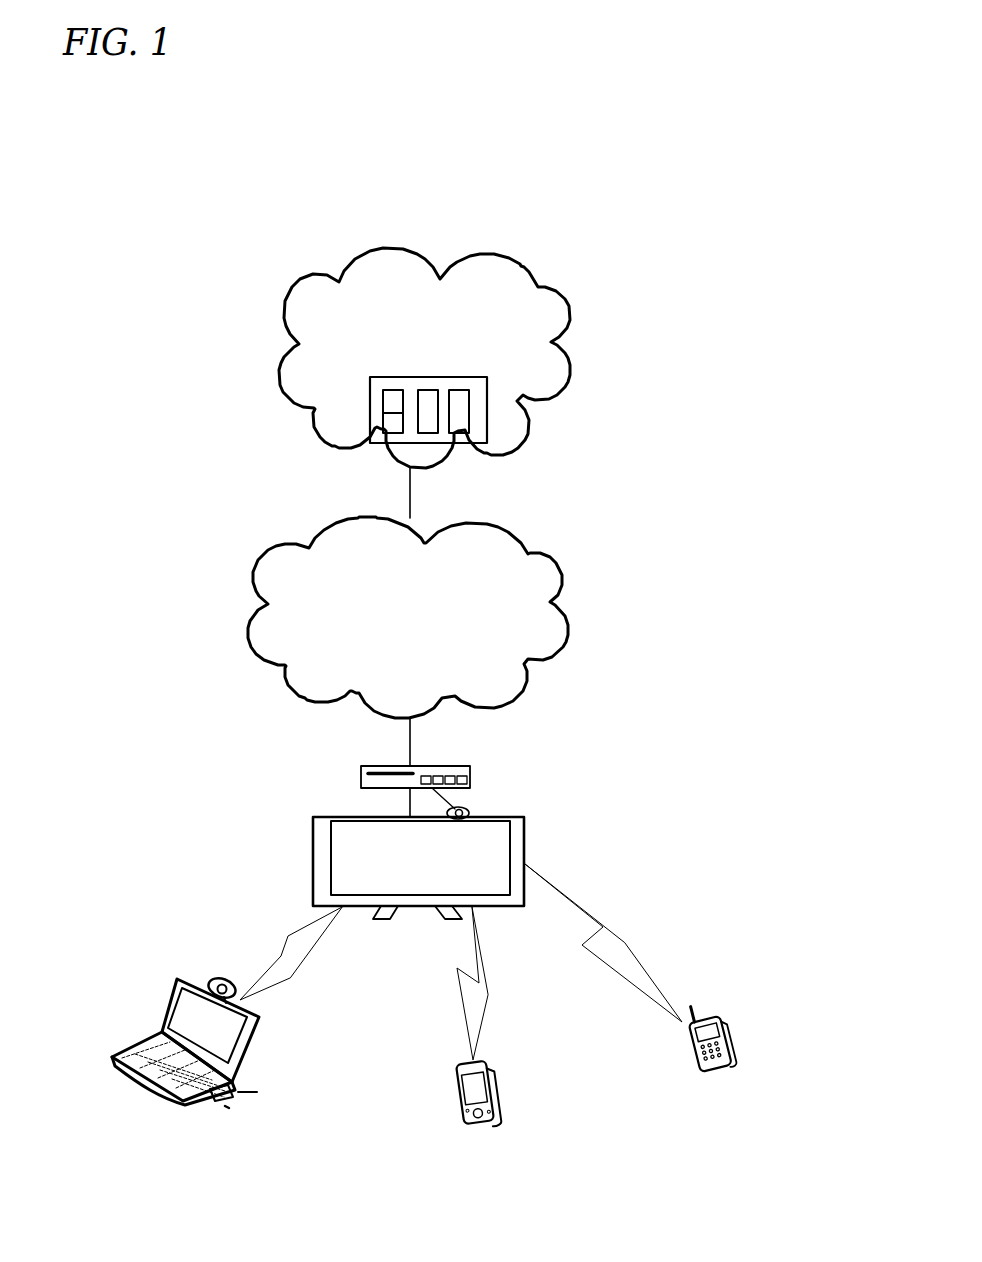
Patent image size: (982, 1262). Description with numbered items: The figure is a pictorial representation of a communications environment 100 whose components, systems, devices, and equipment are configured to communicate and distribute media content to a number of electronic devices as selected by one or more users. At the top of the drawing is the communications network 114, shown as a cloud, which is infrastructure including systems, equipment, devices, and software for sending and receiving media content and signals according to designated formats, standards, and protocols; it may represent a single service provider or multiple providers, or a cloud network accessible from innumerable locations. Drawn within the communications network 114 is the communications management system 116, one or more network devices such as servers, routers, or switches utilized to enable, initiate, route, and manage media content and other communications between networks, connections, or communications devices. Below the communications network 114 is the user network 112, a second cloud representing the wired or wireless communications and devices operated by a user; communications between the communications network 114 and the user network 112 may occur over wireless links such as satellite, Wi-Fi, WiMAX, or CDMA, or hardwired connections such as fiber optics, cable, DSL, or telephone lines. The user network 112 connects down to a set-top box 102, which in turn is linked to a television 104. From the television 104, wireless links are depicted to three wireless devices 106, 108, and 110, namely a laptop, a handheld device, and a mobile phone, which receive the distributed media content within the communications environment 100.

The communications environment 100 is at (190, 215).
The set-top box 102 is at (377, 788).
The television 104 is at (435, 876).
The wireless device 106 is at (175, 1077).
The wireless device 108 is at (498, 1087).
The wireless device 110 is at (720, 1040).
The user network 112 is at (425, 640).
The communications network 114 is at (441, 355).
The communications management system 116 is at (482, 418).